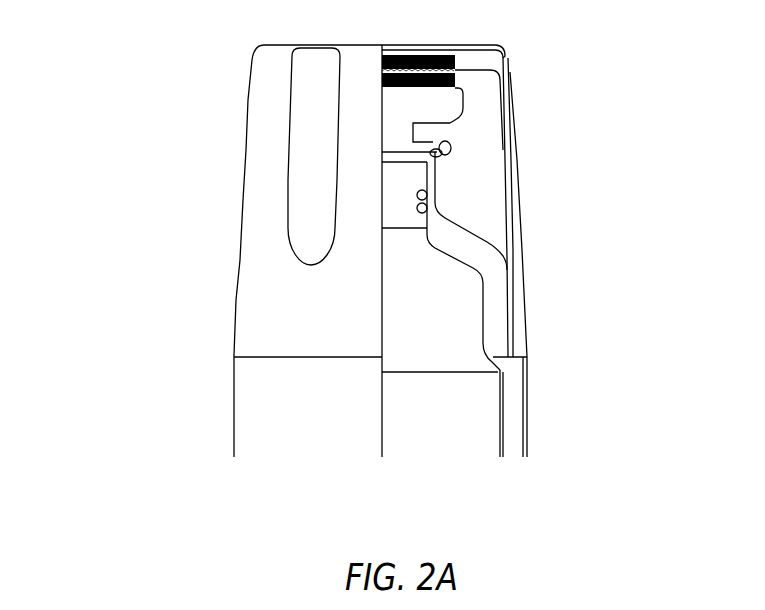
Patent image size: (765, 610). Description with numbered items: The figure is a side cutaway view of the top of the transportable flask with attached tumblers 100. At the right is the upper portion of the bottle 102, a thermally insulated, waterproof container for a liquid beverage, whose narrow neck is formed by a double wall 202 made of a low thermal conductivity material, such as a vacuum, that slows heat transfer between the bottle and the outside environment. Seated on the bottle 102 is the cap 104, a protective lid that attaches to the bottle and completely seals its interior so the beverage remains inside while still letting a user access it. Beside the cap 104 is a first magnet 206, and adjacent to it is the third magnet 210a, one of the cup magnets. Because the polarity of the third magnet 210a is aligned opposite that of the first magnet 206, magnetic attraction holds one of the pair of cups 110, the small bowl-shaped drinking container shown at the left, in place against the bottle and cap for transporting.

The transportable flask with attached tumblers 100 is at (192, 82).
The pair of cups 110 is at (358, 88).
The third magnet 210a is at (455, 53).
The first magnet 206 is at (458, 87).
The cap 104 is at (433, 123).
The double wall 202 is at (486, 242).
The bottle 102 is at (505, 410).